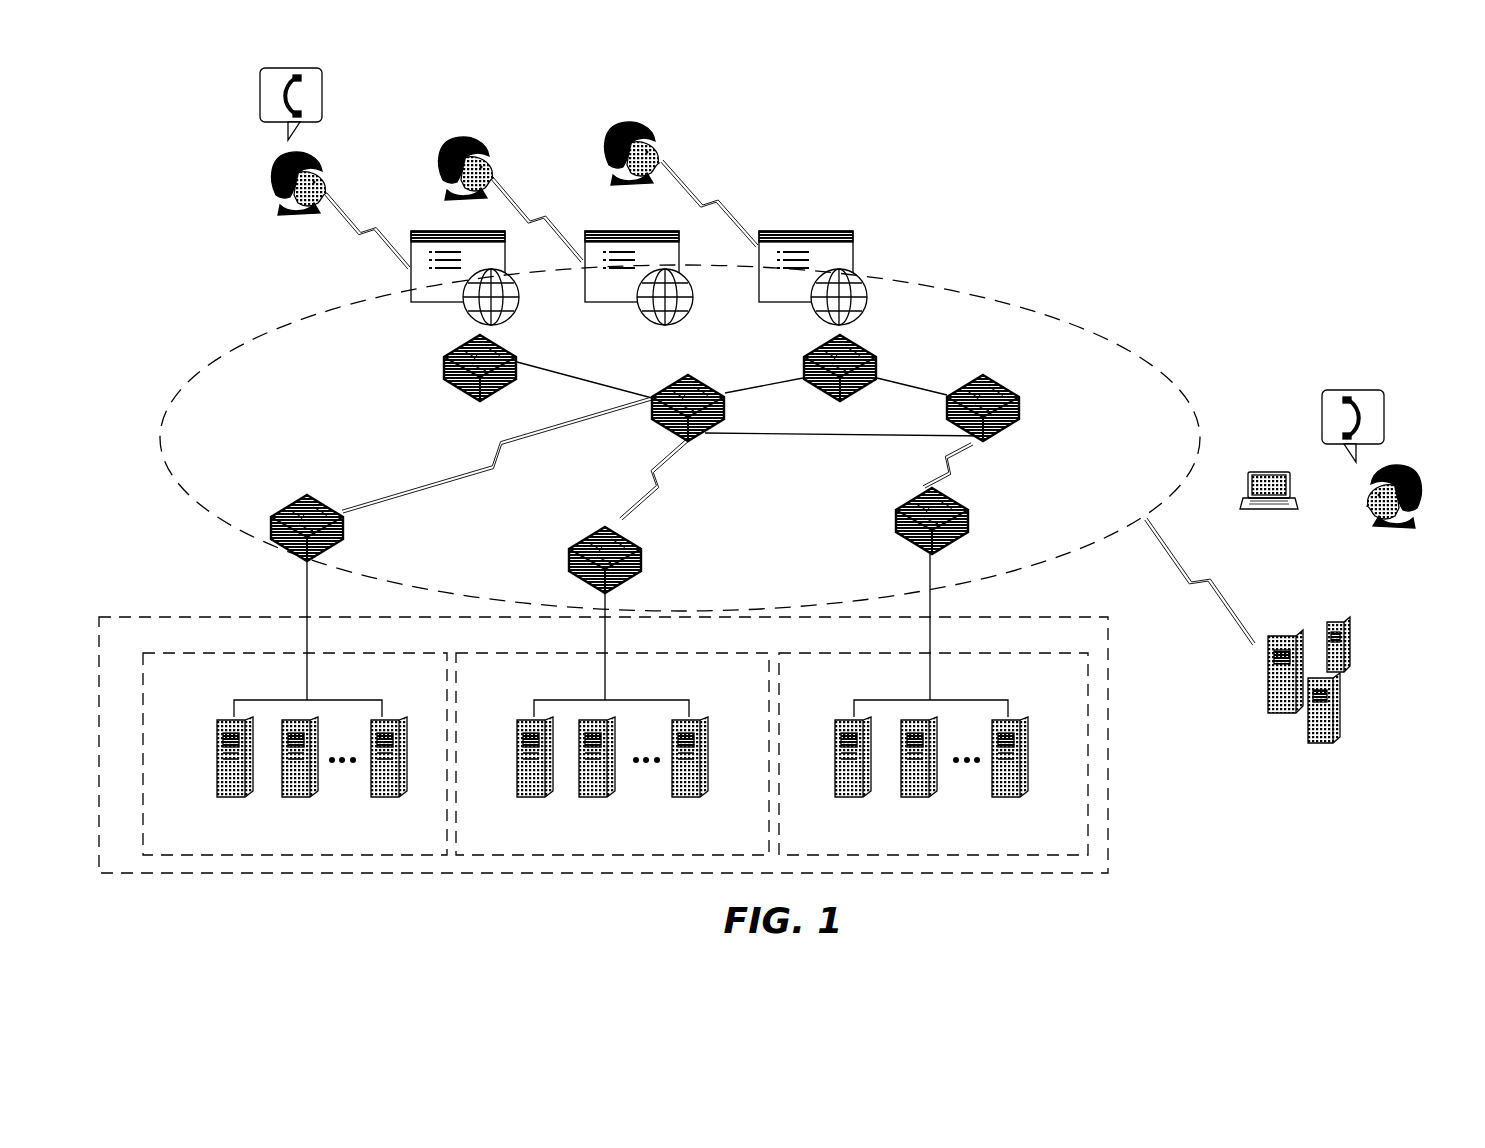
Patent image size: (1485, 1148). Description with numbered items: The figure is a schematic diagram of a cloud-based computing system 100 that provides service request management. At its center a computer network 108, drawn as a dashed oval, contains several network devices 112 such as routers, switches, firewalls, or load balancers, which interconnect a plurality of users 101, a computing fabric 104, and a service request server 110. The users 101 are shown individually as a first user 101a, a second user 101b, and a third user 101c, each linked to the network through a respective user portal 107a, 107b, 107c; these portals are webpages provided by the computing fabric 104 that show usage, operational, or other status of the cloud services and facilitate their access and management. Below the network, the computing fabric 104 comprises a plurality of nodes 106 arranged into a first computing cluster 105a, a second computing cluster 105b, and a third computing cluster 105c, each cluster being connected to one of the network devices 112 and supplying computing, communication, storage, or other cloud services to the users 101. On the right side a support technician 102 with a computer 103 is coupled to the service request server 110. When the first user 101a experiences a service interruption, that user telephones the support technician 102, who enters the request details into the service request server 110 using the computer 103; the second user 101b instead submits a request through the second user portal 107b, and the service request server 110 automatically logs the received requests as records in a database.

The cloud-based computing system 100 is at (1237, 192).
The users 101 is at (177, 106).
The first user 101a is at (267, 162).
The second user 101b is at (429, 147).
The third user 101c is at (601, 132).
The support technician 102 is at (1398, 464).
The computer 103 is at (1267, 470).
The computing fabric 104 is at (812, 201).
The first computing cluster 105a is at (177, 666).
The second computing cluster 105b is at (543, 667).
The third computing cluster 105c is at (872, 667).
The nodes 106 is at (223, 725).
The first user portal 107a is at (517, 300).
The second user portal 107b is at (693, 300).
The third user portal 107c is at (853, 232).
The computer network 108 is at (680, 438).
The service request server 110 is at (1302, 702).
The network devices 112 is at (290, 503).